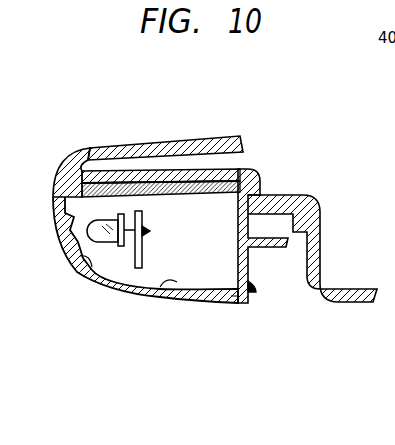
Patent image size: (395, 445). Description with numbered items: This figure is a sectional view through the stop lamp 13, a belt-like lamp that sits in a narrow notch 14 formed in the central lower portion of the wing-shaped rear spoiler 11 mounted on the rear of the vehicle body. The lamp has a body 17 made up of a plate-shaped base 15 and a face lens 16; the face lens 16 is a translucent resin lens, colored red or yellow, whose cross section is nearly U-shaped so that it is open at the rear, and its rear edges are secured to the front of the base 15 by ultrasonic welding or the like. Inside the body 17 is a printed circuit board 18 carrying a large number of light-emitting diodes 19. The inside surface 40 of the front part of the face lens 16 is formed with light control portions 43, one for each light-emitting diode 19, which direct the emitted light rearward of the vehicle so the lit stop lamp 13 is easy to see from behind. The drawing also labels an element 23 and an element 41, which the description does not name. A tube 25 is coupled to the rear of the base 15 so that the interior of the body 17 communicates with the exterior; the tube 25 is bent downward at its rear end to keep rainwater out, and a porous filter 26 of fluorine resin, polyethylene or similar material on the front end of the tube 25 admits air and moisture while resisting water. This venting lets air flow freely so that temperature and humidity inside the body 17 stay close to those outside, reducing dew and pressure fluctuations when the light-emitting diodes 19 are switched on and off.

The rear spoiler 11 is at (178, 141).
The light control portion 43 is at (77, 227).
The inner plate 23 is at (133, 182).
The stop lamp 13 is at (132, 275).
The inside surface 40 is at (83, 277).
The bottom wall of housing 41 is at (170, 288).
The light-emitting diode 19 is at (107, 242).
The printed circuit board 18 is at (138, 270).
The filter 26 is at (236, 238).
The tube 25 is at (290, 203).
The notch 14 is at (312, 251).
The base 15 is at (253, 285).
The face lens 16 is at (231, 310).
The body 17 is at (255, 347).